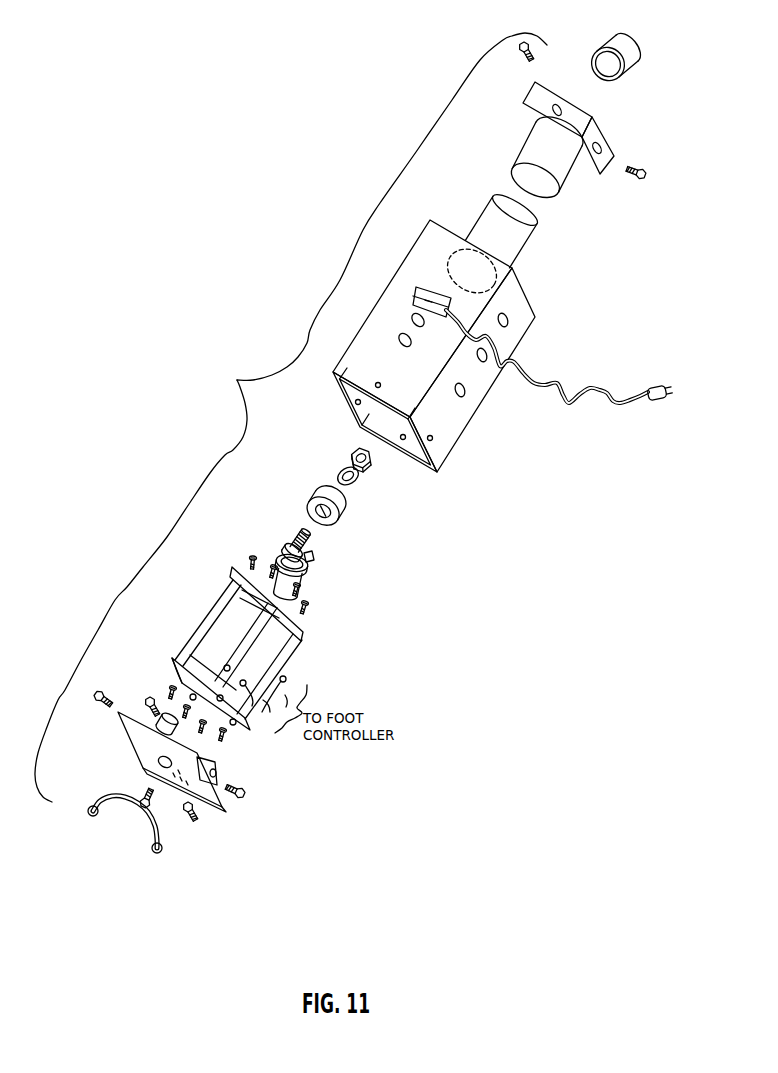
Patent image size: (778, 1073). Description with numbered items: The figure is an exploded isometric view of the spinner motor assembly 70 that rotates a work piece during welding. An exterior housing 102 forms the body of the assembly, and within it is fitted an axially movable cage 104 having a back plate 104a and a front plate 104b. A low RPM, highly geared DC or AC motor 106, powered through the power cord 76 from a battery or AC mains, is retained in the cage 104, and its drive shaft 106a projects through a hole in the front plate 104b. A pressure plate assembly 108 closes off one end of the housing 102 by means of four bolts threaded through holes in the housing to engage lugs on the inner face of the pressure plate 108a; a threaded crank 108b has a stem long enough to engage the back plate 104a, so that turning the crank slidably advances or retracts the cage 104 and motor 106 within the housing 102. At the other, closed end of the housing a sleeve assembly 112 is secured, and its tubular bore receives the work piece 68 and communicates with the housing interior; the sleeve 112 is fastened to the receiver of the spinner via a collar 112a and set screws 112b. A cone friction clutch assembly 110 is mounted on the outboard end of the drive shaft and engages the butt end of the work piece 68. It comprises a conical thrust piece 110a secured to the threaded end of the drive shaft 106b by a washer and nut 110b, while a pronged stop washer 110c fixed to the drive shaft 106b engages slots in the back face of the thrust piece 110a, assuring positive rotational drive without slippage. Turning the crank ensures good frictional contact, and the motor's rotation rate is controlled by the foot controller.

The motor assembly 70 is at (237, 379).
The exterior housing 102 is at (368, 318).
The power cord 76 is at (590, 387).
The work piece 68 is at (638, 66).
The sleeve assembly 112 is at (580, 158).
The collar 112a is at (603, 176).
The set screws 112b is at (522, 56).
The cone friction clutch assembly 110 is at (316, 539).
The conical thrust piece 110a is at (345, 515).
The washer and nut 110b is at (385, 458).
The pronged stop washer 110c is at (278, 554).
The motor 106 is at (295, 575).
The drive shaft 106a is at (290, 597).
The drive shaft 106b is at (296, 532).
The cage 104 is at (212, 649).
The back plate 104a is at (174, 660).
The front plate 104b is at (228, 566).
The pressure plate assembly 108 is at (179, 778).
The pressure plate 108a is at (135, 746).
The threaded crank 108b is at (154, 824).